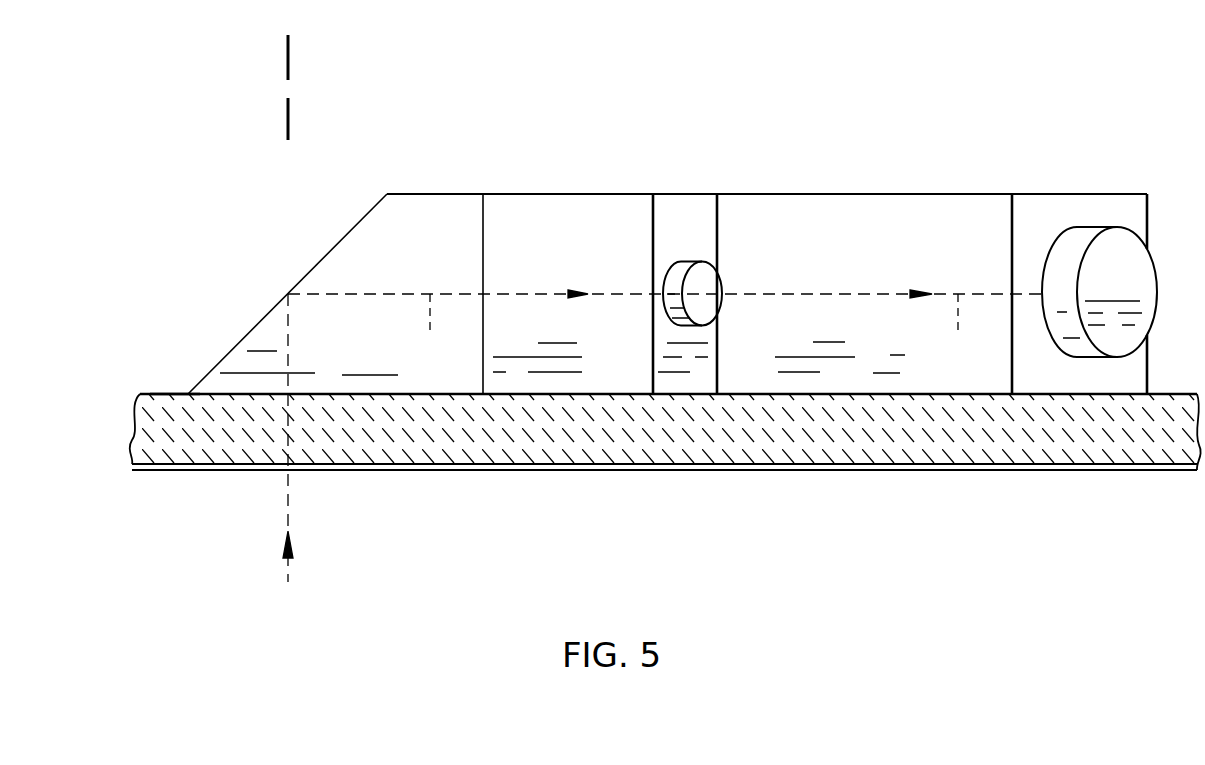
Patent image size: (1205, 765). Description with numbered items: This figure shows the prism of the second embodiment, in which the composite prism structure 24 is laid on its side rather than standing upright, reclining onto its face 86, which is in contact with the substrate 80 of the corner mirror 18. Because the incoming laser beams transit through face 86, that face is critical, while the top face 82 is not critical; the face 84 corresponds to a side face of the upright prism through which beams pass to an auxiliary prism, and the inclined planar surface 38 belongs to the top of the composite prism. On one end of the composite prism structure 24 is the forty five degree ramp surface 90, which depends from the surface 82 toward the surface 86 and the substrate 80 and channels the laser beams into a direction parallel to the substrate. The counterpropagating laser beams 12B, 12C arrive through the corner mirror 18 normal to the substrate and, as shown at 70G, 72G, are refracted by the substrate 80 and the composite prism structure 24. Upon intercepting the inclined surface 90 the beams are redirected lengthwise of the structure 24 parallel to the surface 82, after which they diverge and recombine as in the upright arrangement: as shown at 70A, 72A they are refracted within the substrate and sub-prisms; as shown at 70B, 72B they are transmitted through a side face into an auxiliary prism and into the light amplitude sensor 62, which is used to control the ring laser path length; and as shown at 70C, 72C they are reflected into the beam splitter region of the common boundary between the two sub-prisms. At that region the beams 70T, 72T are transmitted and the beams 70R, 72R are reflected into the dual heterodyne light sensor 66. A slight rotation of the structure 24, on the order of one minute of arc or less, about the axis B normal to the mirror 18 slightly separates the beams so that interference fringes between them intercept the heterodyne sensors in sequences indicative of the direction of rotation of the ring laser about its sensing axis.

The corner mirror 18 is at (1025, 470).
The composite prism structure 24 is at (691, 247).
The planar surface 38 is at (1108, 377).
The light amplitude sensor 62 is at (700, 284).
The dual heterodyne light sensor 66 is at (1120, 300).
The substrate 80 is at (162, 410).
The prism face 82 is at (860, 193).
The prism face 84 is at (977, 205).
The prism face 86 is at (858, 392).
The forty five degree ramp surface 90 is at (338, 242).
The counterpropagating laser beam 12B is at (662, 436).
The counterpropagating laser beam 12C is at (288, 518).
The refracted laser beam 70G is at (309, 347).
The refracted laser beam 72G is at (288, 323).
The refracted laser beam 70A is at (433, 341).
The refracted laser beam 72A is at (440, 294).
The transmitted laser beam 70B is at (566, 340).
The transmitted laser beam 72B is at (623, 294).
The reflected laser beam 70C is at (791, 340).
The reflected laser beam 72C is at (738, 294).
The transmitted beam 70T is at (961, 341).
The reflected beam 70R is at (961, 341).
The transmitted beam 72T is at (961, 341).
The reflected beam 72R is at (964, 294).
The axis B is at (288, 53).